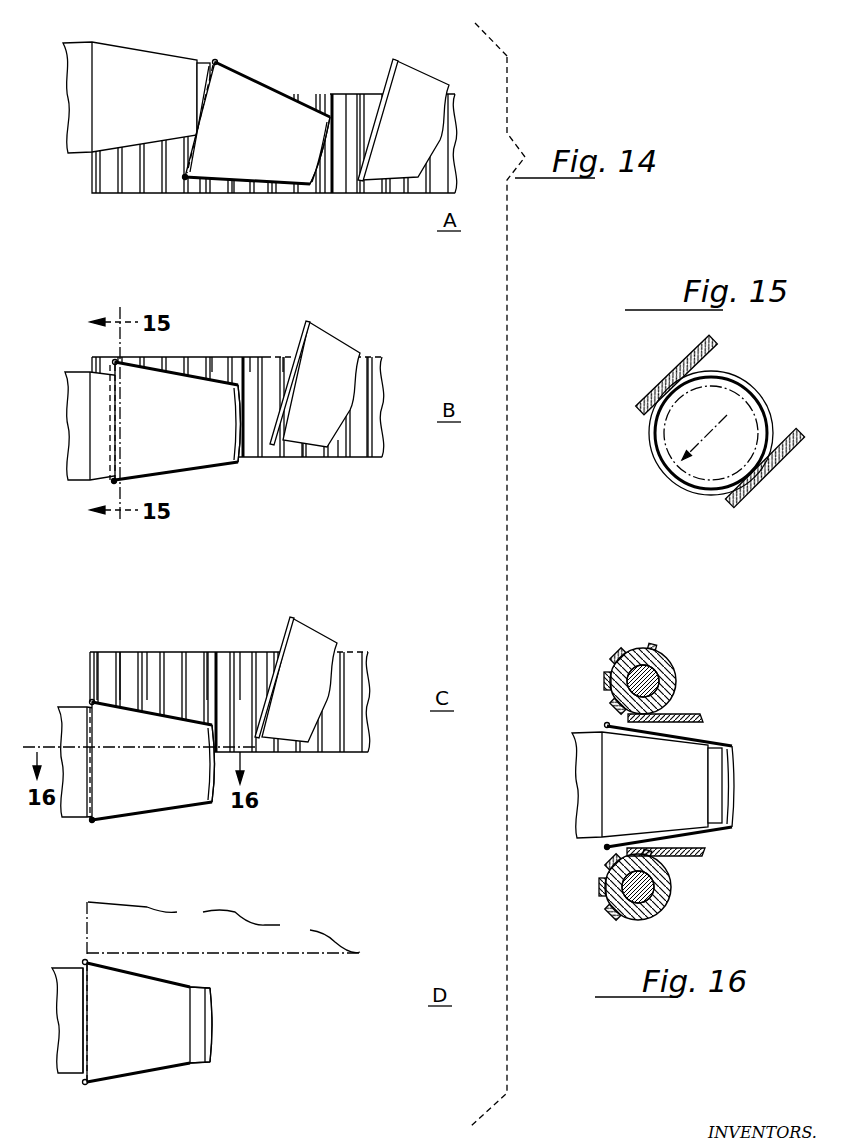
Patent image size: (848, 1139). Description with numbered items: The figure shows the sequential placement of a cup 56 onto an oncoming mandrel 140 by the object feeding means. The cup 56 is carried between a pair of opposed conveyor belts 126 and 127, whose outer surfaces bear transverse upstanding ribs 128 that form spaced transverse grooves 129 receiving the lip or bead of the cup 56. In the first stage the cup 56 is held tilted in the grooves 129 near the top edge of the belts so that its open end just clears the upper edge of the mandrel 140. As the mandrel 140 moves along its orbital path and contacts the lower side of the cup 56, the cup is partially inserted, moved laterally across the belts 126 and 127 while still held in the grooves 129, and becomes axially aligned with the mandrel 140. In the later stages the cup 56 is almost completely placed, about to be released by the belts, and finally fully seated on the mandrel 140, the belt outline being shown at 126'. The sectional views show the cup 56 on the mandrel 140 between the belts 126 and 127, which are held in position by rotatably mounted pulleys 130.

In FIG. 14, the cup 56 is at (262, 82).
In FIG. 15, the cup 56 is at (742, 378).
In FIG. 16, the cup 56 is at (717, 743).
In FIG. 14, the mandrel 140 is at (140, 64).
In FIG. 15, the mandrel 140 is at (752, 413).
In FIG. 16, the mandrel 140 is at (615, 760).
In FIG. 14, the conveyor belt 126 is at (273, 442).
In FIG. 15, the conveyor belt 126 is at (776, 467).
In FIG. 16, the conveyor belt 126 is at (647, 668).
In FIG. 14, the conveyor band outline 126' is at (223, 946).
In FIG. 15, the conveyor belt 127 is at (680, 368).
In FIG. 16, the conveyor belt 127 is at (622, 920).
In FIG. 14, the transverse upstanding ribs 128 is at (390, 190).
In FIG. 14, the transverse grooves 129 is at (268, 188).
In FIG. 16, the pulleys 130 is at (667, 665).